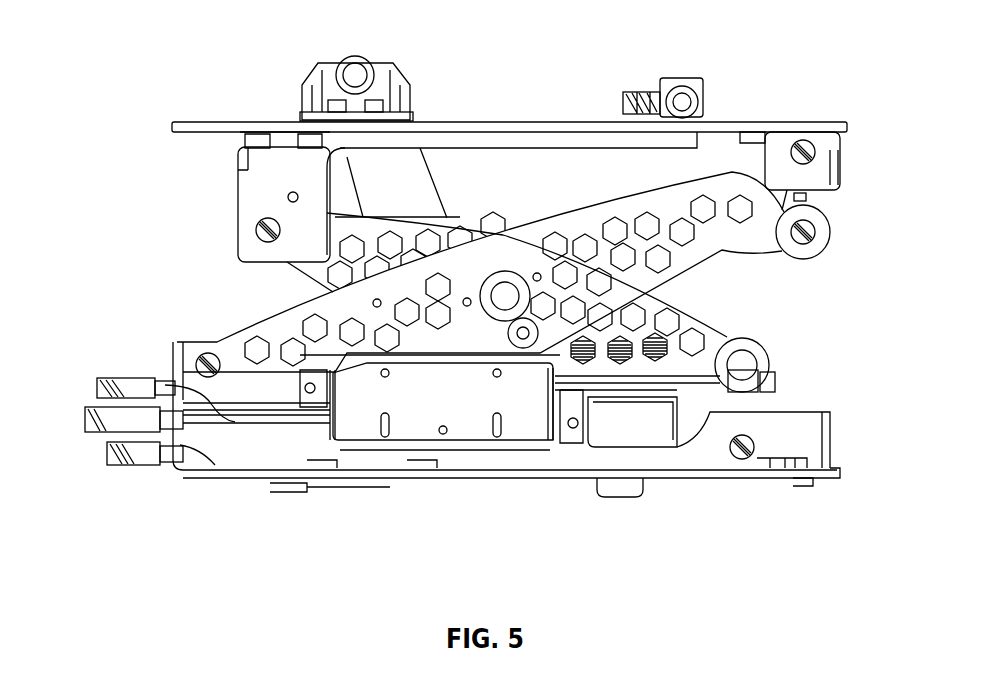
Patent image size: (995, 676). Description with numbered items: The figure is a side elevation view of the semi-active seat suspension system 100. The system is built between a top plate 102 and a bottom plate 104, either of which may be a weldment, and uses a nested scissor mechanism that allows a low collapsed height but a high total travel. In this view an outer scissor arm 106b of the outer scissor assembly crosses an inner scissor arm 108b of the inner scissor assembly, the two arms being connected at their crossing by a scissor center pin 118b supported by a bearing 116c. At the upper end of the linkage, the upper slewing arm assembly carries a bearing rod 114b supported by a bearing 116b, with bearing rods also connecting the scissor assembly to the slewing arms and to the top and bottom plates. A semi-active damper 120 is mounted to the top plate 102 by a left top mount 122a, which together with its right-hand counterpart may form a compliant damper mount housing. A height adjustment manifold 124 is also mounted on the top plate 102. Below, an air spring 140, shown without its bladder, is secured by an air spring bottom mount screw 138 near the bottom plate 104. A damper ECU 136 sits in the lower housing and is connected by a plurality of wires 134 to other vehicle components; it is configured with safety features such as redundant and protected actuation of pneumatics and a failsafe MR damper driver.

The semi-active seat suspension system 100 is at (148, 40).
The top plate 102 is at (200, 127).
The bottom plate 104 is at (700, 480).
The outer scissor arm 106b is at (720, 248).
The inner scissor arm 108b is at (713, 327).
The bearing rod 114b is at (808, 225).
The bearing 116b is at (808, 246).
The bearing 116c is at (525, 347).
The scissor center pin 118b is at (507, 305).
The semi-active damper 120 is at (437, 178).
The left top mount 122a is at (307, 80).
The height adjustment manifold 124 is at (697, 78).
The wires 134 is at (85, 450).
The damper ECU 136 is at (370, 433).
The air spring bottom mount screw 138 is at (625, 498).
The air spring 140 is at (660, 438).